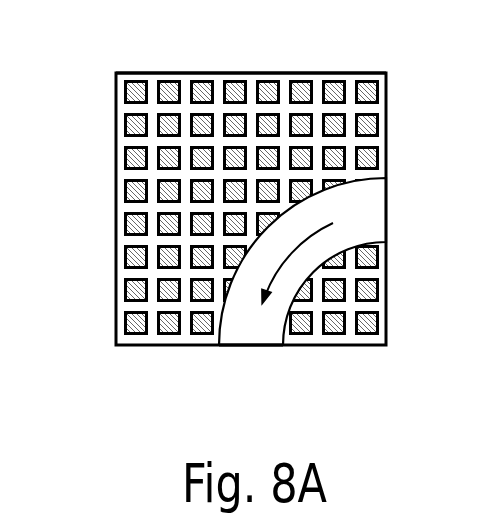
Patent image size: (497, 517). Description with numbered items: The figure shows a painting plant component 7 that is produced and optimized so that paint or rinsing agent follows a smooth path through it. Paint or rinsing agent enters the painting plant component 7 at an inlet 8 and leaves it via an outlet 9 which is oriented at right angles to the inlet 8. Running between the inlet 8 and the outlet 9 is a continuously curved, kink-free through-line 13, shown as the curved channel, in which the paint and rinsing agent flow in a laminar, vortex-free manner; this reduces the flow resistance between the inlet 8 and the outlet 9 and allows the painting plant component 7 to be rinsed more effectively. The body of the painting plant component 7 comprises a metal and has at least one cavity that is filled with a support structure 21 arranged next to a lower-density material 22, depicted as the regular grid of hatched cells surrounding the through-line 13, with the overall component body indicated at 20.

The painting plant component 7 is at (212, 73).
The inlet 8 is at (388, 213).
The outlet 9 is at (247, 345).
The through-line 13 is at (308, 258).
The block 20 is at (265, 77).
The support structure 21 is at (135, 308).
The lower-density material 22 is at (135, 238).